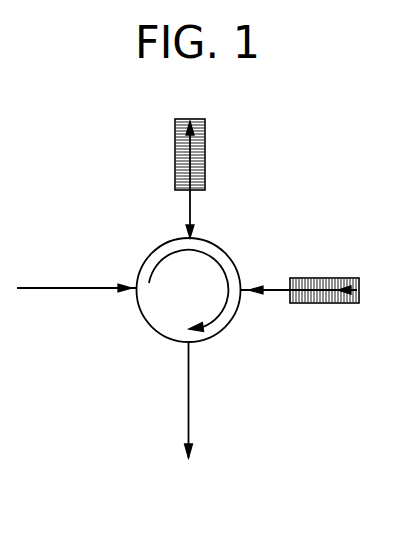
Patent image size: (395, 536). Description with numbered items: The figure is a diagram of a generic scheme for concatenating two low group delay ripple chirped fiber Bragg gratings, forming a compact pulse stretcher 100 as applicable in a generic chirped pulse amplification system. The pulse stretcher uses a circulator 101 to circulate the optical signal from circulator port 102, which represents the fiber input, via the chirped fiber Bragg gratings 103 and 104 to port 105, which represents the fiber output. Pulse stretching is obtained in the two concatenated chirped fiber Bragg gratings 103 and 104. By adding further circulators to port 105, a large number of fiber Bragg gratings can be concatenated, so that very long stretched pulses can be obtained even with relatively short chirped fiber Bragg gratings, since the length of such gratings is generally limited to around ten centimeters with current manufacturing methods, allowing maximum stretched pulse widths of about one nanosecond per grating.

The compact pulse stretcher 100 is at (260, 459).
The circulator 101 is at (225, 252).
The circulator port 102 is at (103, 287).
The chirped fiber Bragg grating 103 is at (175, 143).
The chirped fiber Bragg grating 104 is at (298, 278).
The port 105 is at (190, 400).